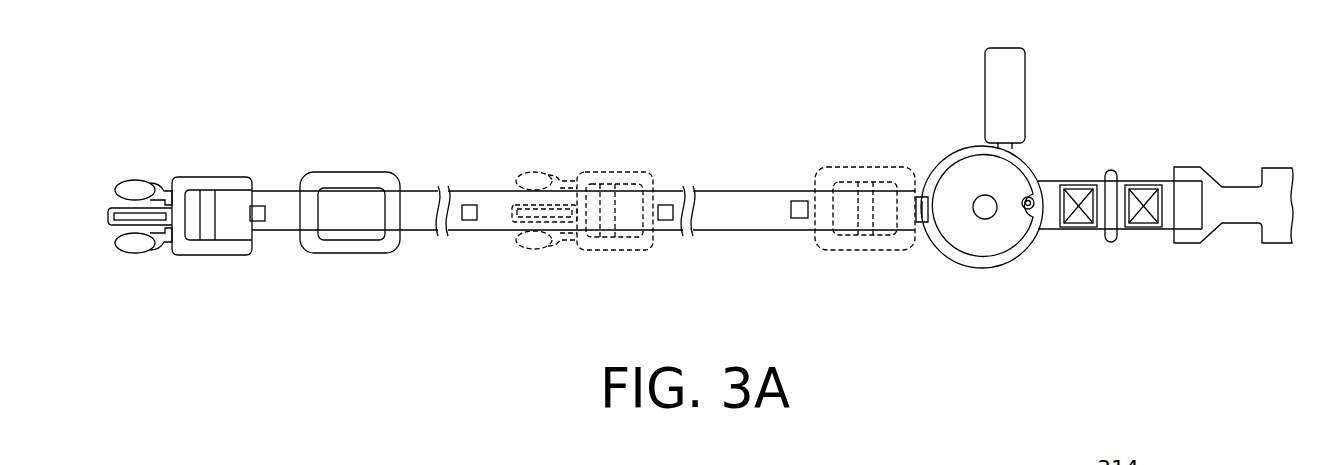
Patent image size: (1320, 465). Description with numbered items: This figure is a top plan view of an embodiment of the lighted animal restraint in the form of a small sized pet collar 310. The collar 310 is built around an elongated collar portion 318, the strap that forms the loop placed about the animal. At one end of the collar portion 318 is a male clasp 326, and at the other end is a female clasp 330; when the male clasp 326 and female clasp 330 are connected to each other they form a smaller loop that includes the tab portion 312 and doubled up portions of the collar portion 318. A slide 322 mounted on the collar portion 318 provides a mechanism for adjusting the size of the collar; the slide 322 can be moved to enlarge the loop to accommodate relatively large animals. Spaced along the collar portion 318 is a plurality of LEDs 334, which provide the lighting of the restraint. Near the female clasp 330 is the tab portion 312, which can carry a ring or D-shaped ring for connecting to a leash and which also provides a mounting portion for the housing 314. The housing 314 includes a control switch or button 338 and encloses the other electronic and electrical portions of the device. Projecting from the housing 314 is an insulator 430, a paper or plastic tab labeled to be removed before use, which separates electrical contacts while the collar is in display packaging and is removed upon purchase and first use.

The pet collar 310 is at (727, 174).
The tab portion 312 is at (1111, 242).
The housing 314 is at (1029, 189).
The collar portion 318 is at (724, 232).
The slide 322 is at (342, 176).
The male clasp 326 is at (170, 155).
The female clasp 330 is at (1213, 150).
The LEDs 334 is at (259, 221).
The control switch or button 338 is at (985, 219).
The insulator 430 is at (1013, 50).